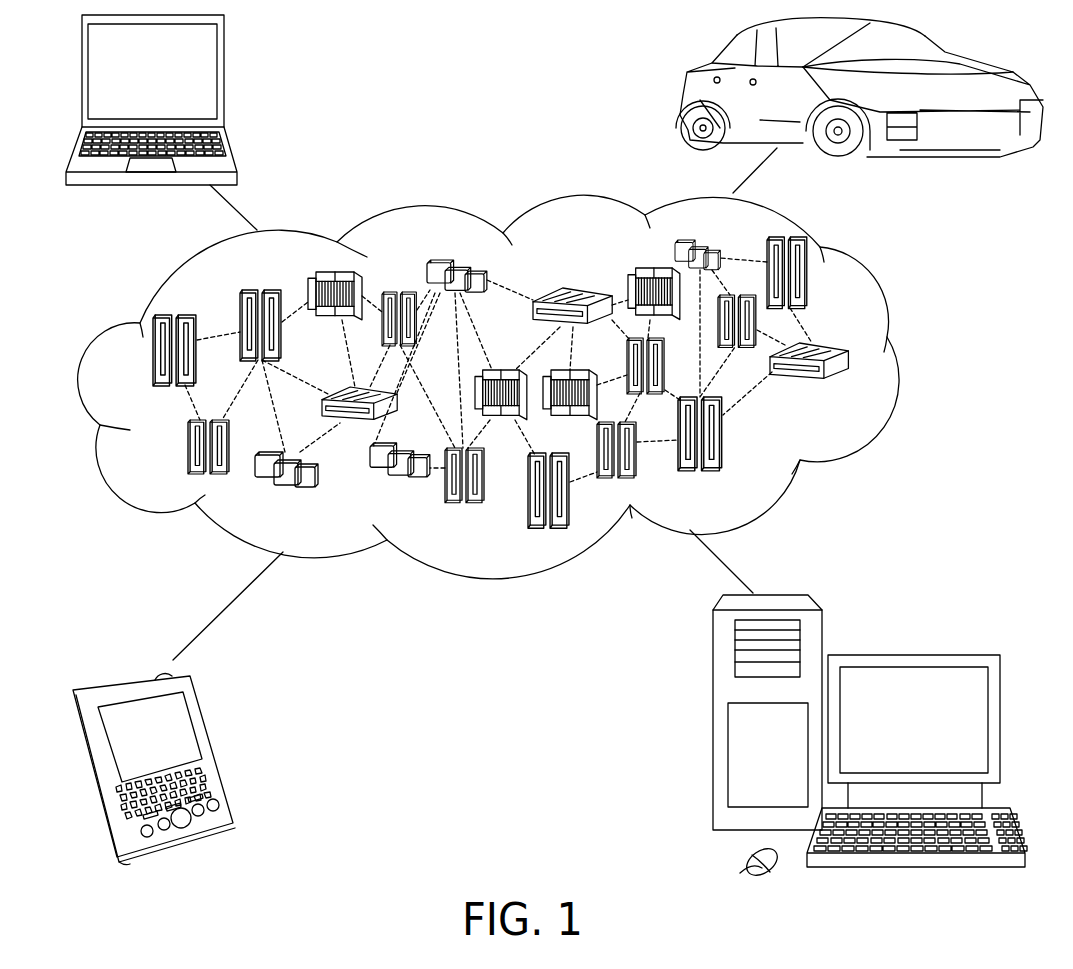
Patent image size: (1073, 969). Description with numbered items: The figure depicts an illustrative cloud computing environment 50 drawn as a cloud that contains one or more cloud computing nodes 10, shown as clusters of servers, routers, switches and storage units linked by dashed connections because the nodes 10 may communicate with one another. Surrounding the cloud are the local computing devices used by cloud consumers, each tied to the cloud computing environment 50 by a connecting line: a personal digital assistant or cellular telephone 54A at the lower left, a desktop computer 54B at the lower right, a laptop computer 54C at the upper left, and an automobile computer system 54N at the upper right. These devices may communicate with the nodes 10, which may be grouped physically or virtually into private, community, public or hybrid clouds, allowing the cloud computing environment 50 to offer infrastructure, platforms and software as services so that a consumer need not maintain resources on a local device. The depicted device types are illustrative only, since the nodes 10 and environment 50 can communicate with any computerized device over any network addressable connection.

The cloud computing node 10 is at (862, 392).
The cloud computing environment 50 is at (527, 387).
The personal digital assistant or cellular telephone 54A is at (213, 750).
The desktop computer 54B is at (910, 655).
The laptop computer 54C is at (224, 79).
The automobile computer system 54N is at (687, 100).